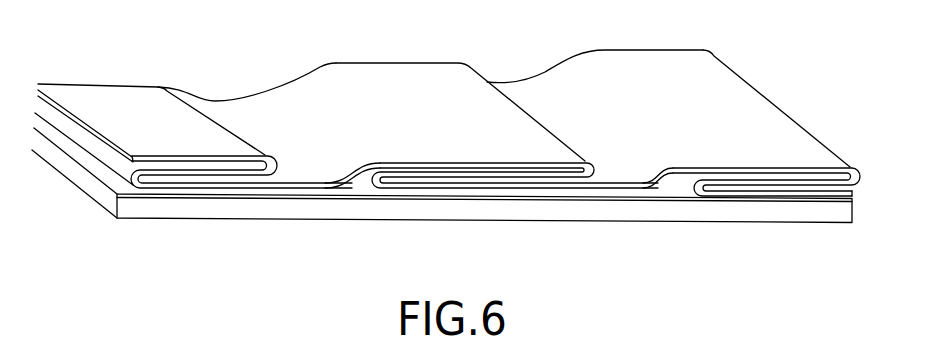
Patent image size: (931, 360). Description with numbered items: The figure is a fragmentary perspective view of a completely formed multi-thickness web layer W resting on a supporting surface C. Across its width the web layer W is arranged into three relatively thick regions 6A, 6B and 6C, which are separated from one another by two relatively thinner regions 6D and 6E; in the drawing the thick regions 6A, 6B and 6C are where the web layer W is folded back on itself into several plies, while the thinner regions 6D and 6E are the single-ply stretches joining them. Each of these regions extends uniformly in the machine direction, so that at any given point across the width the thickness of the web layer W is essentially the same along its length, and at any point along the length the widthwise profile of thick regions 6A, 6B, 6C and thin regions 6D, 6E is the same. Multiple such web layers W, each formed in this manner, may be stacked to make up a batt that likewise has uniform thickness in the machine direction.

The web layer W is at (447, 144).
The carrier C is at (843, 211).
The relatively thick region 6A is at (852, 227).
The relatively thick region 6B is at (582, 223).
The relatively thick region 6C is at (263, 221).
The relatively thinner region 6D is at (690, 223).
The relatively thinner region 6E is at (378, 222).